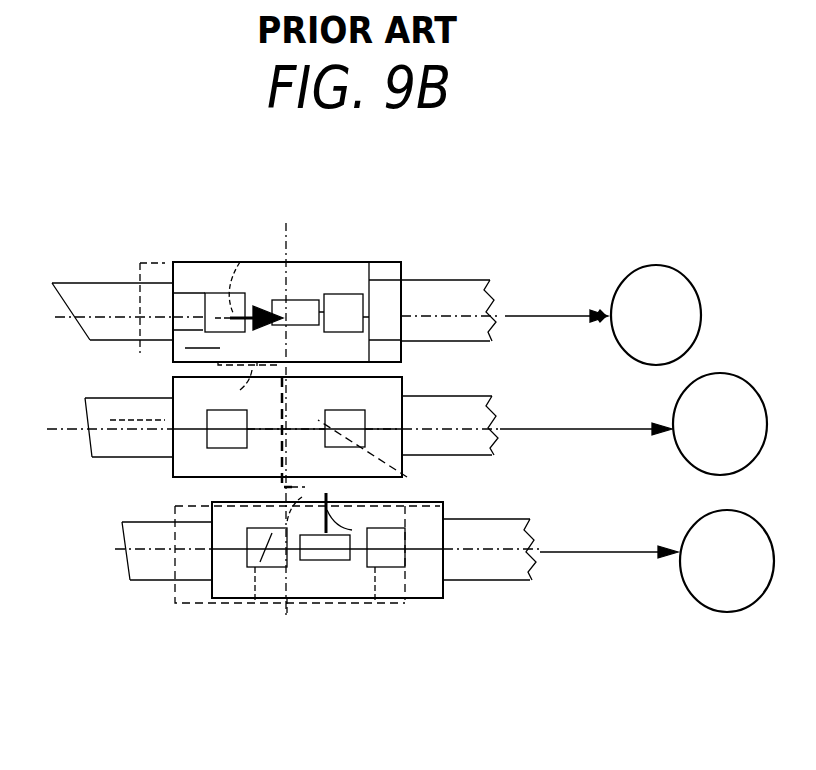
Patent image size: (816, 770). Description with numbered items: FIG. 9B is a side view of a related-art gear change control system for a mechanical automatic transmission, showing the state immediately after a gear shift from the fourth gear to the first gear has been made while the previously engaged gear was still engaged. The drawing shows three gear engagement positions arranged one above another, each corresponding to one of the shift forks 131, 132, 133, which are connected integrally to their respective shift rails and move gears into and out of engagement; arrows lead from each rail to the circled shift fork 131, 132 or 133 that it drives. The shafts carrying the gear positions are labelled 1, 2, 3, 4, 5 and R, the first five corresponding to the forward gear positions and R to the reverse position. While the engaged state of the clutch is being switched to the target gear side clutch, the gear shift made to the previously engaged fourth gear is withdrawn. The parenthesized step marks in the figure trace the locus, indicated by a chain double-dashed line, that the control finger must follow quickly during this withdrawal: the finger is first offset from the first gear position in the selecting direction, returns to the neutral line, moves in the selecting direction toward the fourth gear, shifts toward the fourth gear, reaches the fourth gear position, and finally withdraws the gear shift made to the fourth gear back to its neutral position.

The first shaft (input shaft) 1 is at (499, 540).
The second shaft (output shaft) 2 is at (459, 297).
The third shaft 3 is at (459, 413).
The fourth shaft 4 is at (112, 297).
The fifth shaft 5 is at (106, 427).
The reverse shaft R is at (153, 551).
The shift fork 131 is at (657, 561).
The shift fork 132 is at (633, 424).
The shift fork 133 is at (603, 315).